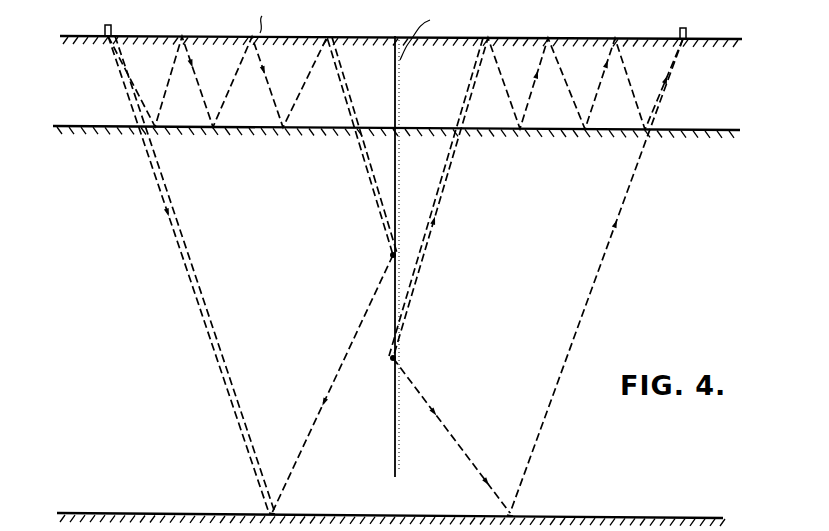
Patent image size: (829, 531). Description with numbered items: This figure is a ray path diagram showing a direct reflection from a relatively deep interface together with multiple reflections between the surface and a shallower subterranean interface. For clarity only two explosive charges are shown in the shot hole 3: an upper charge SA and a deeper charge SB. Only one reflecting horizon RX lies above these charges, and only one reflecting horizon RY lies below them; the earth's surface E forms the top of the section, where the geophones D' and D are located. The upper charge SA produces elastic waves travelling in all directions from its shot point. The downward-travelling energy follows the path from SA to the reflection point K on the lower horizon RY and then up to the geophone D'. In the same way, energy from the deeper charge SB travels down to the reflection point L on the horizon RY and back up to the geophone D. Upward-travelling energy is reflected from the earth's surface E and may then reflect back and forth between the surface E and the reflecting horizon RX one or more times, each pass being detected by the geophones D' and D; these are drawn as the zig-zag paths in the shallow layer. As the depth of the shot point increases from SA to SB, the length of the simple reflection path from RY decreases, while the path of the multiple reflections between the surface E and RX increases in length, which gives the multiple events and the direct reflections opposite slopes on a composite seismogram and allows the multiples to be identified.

The geophone D' is at (110, 20).
The geophone D is at (684, 24).
The earth's surface E is at (591, 38).
The shot hole 3 is at (396, 172).
The upper explosive charge SA is at (390, 255).
The lower explosive charge SB is at (395, 357).
The reflection point K is at (273, 522).
The reflection point L is at (511, 523).
The upper reflecting horizon RX is at (387, 128).
The lower reflecting horizon RY is at (381, 515).